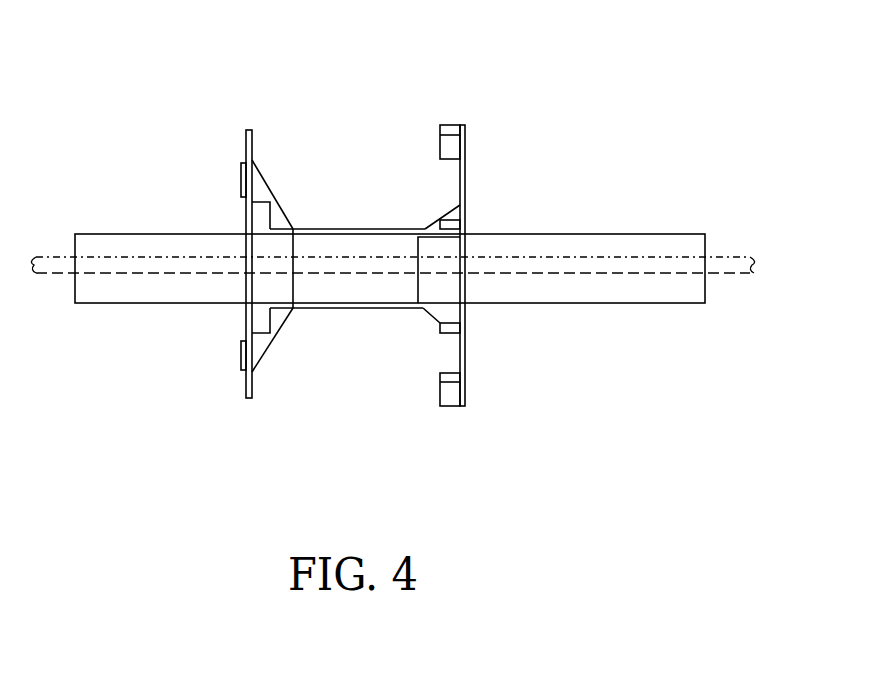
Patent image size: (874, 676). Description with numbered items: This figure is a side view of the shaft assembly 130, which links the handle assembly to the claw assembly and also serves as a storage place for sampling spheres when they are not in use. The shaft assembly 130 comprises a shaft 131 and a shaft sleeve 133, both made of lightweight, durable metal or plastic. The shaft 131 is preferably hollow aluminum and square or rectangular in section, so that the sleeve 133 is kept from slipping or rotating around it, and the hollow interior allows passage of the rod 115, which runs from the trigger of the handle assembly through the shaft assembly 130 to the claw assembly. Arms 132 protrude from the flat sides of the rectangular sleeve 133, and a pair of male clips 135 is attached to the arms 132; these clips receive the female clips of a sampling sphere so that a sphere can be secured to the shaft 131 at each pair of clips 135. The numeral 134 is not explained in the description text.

The shaft assembly 130 is at (847, 50).
The shaft 131 is at (602, 250).
The arms 132 is at (241, 181).
The shaft sleeve 133 is at (360, 248).
The counterweights 134 is at (452, 147).
The male clips 135 is at (246, 154).
The rod 115 is at (735, 268).